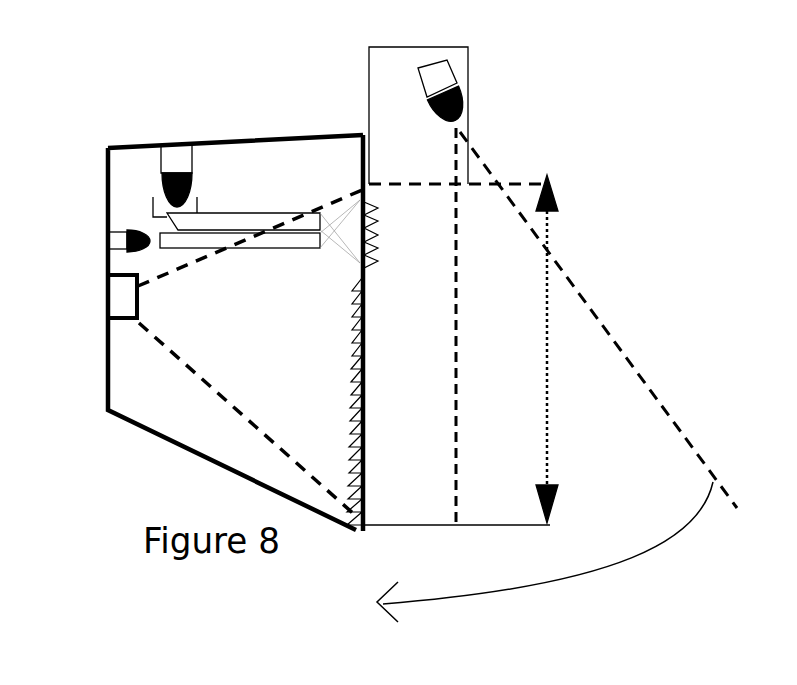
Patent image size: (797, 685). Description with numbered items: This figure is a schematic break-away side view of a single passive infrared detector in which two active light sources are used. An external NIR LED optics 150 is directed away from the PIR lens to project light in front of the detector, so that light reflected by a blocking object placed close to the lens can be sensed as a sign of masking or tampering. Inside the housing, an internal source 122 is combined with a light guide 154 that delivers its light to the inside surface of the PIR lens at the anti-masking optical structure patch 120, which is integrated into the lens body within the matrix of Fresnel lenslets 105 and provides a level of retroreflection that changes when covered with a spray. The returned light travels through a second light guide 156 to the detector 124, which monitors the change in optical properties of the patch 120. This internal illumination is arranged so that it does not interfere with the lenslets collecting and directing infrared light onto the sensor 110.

The Fresnel lenslets 105 is at (365, 332).
The sensor 110 is at (108, 318).
The anti-masking optical structure patch 120 is at (378, 247).
The internal source 122 is at (162, 173).
The detector 124 is at (127, 232).
The NIR LED optics 150 is at (467, 100).
The light guide 154 is at (292, 220).
The light guide 156 is at (233, 235).